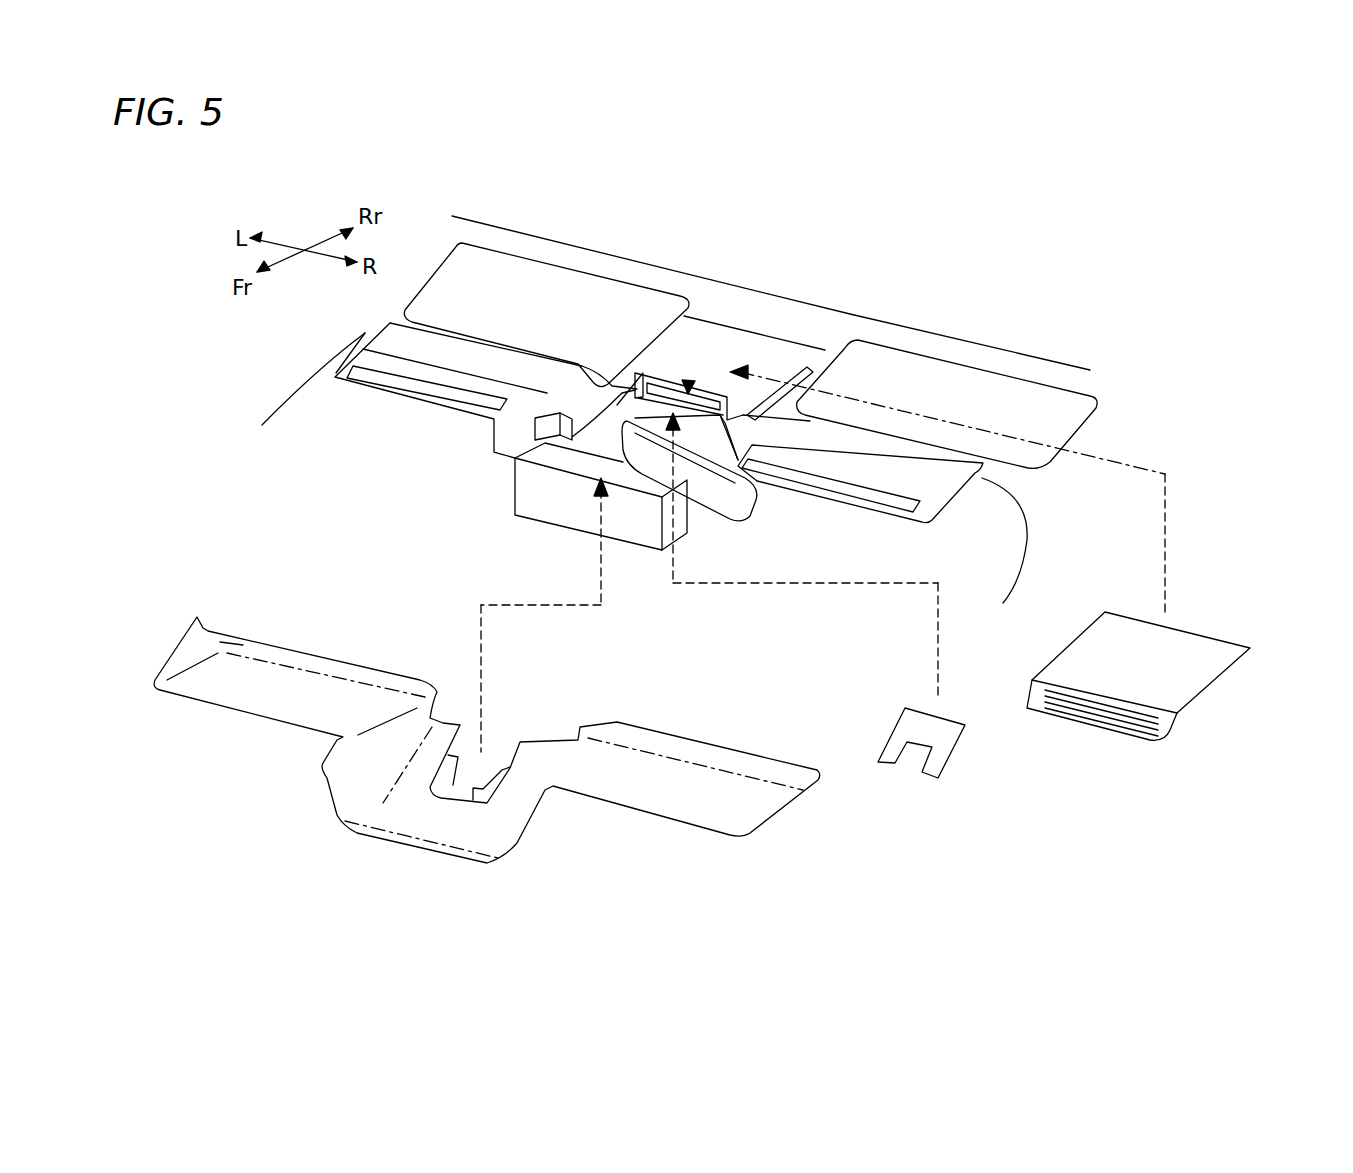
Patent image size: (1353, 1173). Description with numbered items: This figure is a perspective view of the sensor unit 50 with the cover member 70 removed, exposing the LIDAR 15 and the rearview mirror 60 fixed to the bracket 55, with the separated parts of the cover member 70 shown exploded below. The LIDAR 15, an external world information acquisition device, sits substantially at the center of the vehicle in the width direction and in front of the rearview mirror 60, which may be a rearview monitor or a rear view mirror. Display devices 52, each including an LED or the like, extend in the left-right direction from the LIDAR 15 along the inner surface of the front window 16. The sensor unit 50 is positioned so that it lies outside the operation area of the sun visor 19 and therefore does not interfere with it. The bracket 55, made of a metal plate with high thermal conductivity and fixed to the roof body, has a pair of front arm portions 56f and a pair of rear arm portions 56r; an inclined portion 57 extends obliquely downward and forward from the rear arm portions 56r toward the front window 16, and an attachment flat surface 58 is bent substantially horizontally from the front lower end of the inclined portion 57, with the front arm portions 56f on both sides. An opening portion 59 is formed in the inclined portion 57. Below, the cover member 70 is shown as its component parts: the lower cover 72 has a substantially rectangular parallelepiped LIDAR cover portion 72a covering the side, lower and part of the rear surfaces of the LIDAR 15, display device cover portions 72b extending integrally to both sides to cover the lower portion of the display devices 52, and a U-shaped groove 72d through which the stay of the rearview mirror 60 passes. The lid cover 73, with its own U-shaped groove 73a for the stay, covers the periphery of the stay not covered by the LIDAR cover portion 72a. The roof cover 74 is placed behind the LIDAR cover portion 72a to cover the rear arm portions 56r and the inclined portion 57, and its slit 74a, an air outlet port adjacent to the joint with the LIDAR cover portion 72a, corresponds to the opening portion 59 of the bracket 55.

The LIDAR 15 is at (565, 490).
The front window 16 is at (993, 563).
The sun visor 19 is at (555, 290).
The sensor unit 50 is at (1200, 500).
The display device 52 is at (415, 405).
The bracket 55 is at (690, 385).
The front arm portions 56f is at (545, 432).
The rear arm portions 56r is at (640, 375).
The inclined portion 57 is at (722, 445).
The attachment flat surface 58 is at (603, 440).
The opening portion 59 is at (688, 380).
The rearview mirror 60 is at (740, 505).
The cover member 70 is at (883, 890).
The lower cover 72 is at (487, 753).
The LIDAR cover portion 72a is at (345, 800).
The display device cover portions 72b is at (255, 700).
The U-shaped groove 72d is at (500, 772).
The lid cover 73 is at (940, 772).
The U-shaped groove 73a is at (898, 762).
The roof cover 74 is at (1154, 710).
The slit 74a is at (1125, 735).